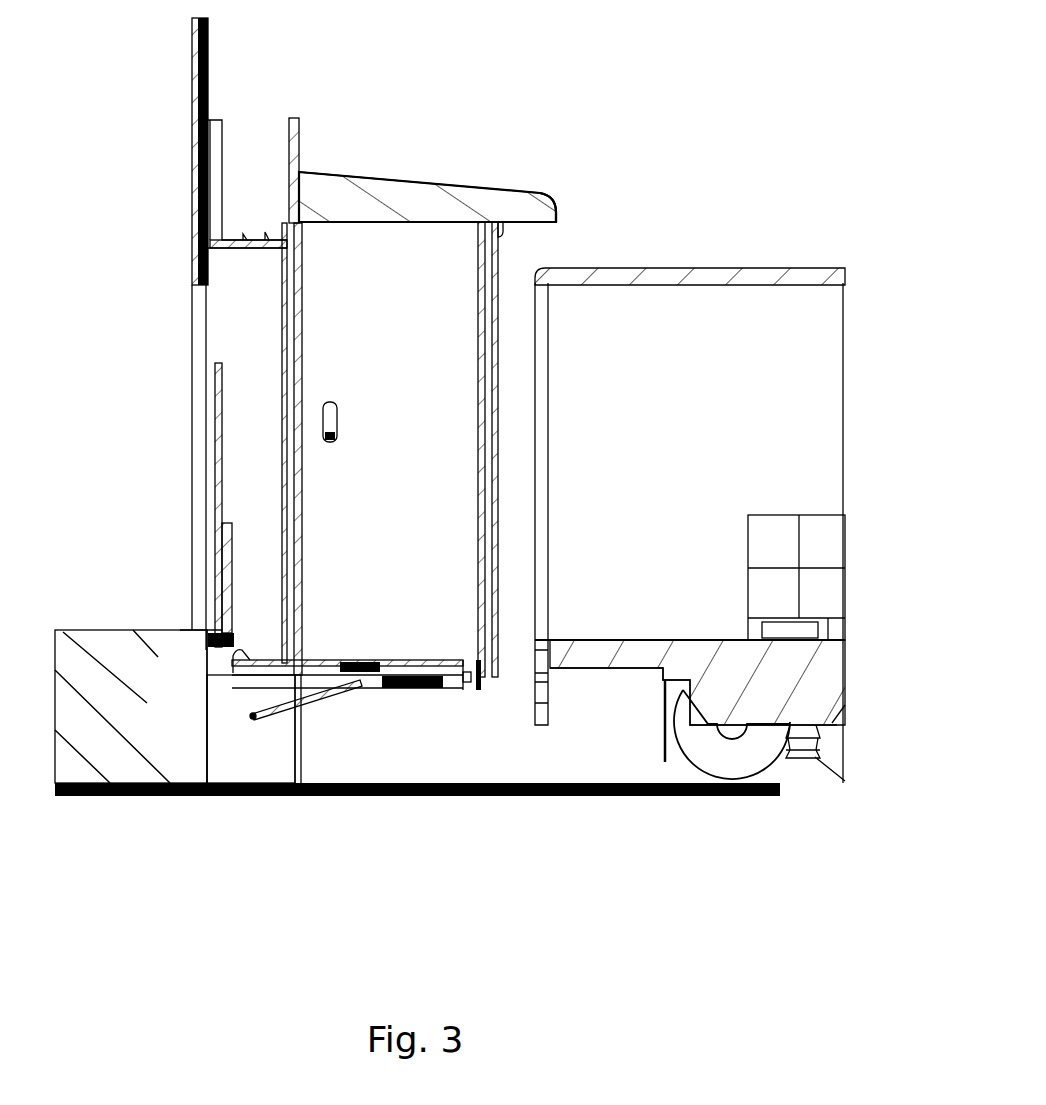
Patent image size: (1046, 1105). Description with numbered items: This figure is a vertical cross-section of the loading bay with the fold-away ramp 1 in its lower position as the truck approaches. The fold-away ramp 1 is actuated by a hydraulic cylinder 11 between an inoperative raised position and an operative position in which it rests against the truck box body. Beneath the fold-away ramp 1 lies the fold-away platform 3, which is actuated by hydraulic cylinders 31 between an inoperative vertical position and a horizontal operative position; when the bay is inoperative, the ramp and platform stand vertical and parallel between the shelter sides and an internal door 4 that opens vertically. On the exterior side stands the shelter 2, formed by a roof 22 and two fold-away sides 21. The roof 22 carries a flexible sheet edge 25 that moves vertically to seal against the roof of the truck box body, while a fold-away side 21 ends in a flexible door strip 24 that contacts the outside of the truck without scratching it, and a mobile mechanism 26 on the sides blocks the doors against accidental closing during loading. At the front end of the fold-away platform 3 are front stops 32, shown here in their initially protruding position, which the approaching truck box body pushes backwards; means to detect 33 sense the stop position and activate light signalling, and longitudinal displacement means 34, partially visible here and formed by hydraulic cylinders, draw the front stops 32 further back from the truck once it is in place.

The fold-away ramp 1 is at (215, 440).
The shelter 2 is at (495, 184).
The fold-away platform 3 is at (356, 668).
The internal door 4 is at (192, 100).
The hydraulic cylinder 11 is at (218, 580).
The fold-away sides 21 is at (448, 252).
The roof 22 is at (360, 196).
The flexible door strip 24 is at (498, 280).
The flexible sheet edge 25 is at (517, 217).
The mobile mechanism 26 is at (324, 412).
The hydraulic cylinders 31 is at (290, 708).
The front stops 32 is at (490, 690).
The means to detect 33 is at (393, 690).
The longitudinal displacement means 34 is at (470, 690).